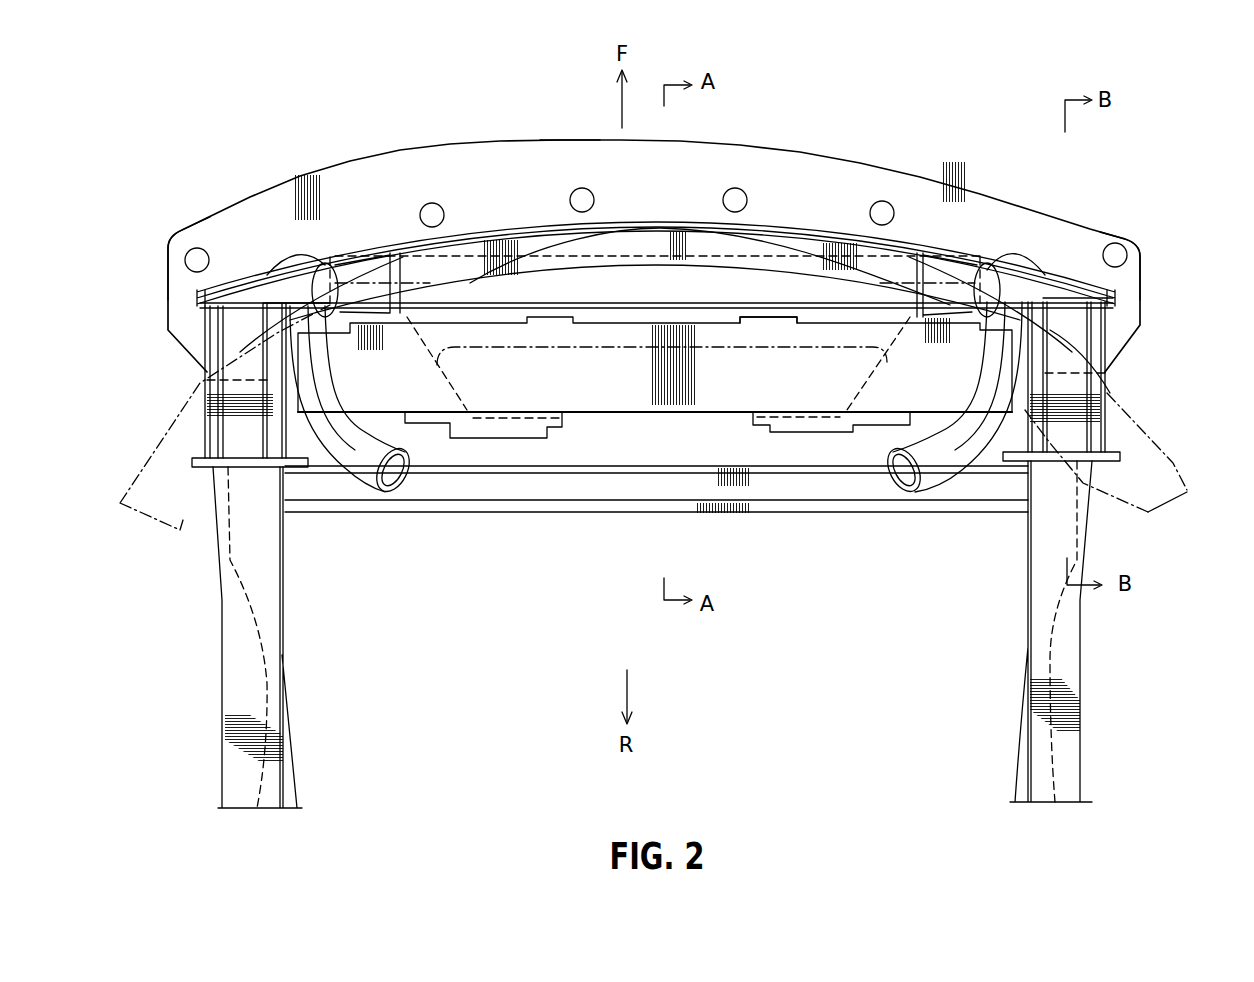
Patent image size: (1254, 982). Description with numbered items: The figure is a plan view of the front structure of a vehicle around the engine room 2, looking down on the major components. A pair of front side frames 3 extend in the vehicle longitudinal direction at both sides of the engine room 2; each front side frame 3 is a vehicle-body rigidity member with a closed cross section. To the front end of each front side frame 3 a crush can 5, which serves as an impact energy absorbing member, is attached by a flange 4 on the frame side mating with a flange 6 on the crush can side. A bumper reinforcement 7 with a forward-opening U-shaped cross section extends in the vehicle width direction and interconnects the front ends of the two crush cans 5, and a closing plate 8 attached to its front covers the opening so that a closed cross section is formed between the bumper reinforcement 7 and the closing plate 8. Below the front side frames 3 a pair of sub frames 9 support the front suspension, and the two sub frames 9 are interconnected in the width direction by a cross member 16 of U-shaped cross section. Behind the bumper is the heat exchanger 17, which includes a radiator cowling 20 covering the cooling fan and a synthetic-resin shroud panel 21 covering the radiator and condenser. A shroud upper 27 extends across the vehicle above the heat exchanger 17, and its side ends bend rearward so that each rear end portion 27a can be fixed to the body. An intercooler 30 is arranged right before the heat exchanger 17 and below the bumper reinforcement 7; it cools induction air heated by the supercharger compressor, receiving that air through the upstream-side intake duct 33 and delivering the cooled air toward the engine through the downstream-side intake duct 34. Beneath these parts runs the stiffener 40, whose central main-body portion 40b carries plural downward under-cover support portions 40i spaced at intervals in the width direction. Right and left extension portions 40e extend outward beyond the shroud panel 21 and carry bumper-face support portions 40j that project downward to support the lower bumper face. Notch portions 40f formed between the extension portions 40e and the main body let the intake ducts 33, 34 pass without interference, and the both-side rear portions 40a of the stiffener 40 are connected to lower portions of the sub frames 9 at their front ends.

The engine room 2 is at (566, 653).
The front side frame 3 is at (222, 648).
The flange 4 is at (243, 468).
The crush can 5 is at (205, 402).
The flange 6 is at (200, 458).
The bumper reinforcement 7 is at (640, 264).
The closing plate 8 is at (657, 220).
The sub frame 9 is at (265, 683).
The cross member 16 is at (510, 515).
The heat exchanger 17 is at (667, 416).
The radiator cowling 20 is at (530, 440).
The shroud panel 21 is at (566, 383).
The shroud upper 27 is at (787, 248).
The rear end portion 27a is at (147, 512).
The intercooler 30 is at (758, 314).
The upstream-side intake duct 33 is at (945, 488).
The downstream-side intake duct 34 is at (375, 490).
The stiffener 40 is at (458, 142).
The both-side rear portion 40a is at (207, 378).
The main-body portion 40b is at (571, 148).
The extension portion 40e is at (196, 247).
The notch portion 40f is at (292, 256).
The under-cover support portion 40i is at (420, 212).
The bumper-face support portion 40j is at (184, 262).